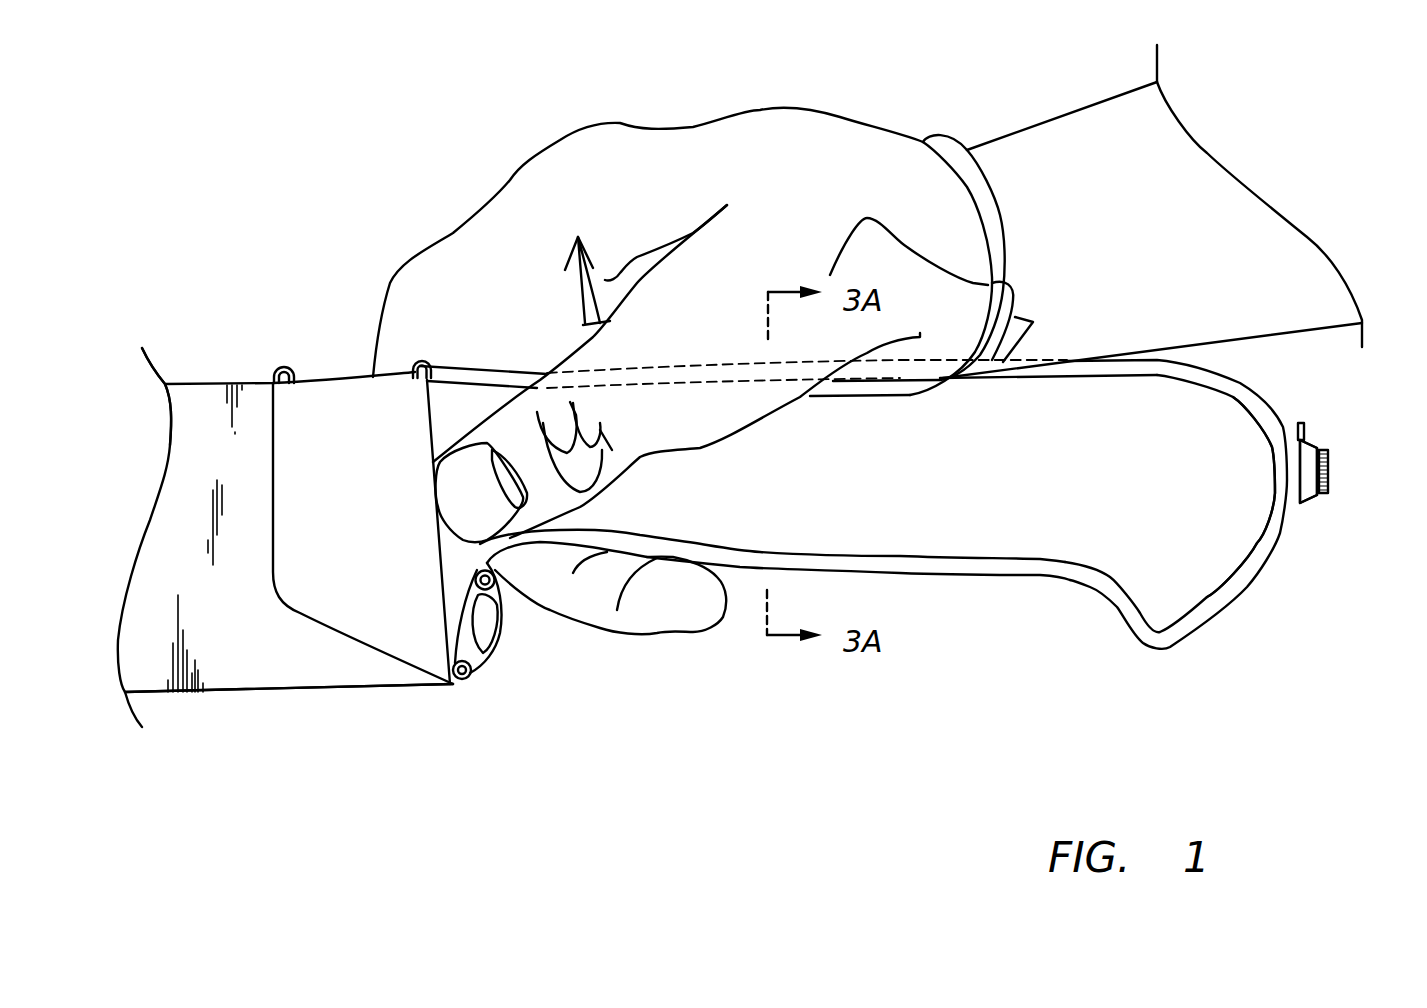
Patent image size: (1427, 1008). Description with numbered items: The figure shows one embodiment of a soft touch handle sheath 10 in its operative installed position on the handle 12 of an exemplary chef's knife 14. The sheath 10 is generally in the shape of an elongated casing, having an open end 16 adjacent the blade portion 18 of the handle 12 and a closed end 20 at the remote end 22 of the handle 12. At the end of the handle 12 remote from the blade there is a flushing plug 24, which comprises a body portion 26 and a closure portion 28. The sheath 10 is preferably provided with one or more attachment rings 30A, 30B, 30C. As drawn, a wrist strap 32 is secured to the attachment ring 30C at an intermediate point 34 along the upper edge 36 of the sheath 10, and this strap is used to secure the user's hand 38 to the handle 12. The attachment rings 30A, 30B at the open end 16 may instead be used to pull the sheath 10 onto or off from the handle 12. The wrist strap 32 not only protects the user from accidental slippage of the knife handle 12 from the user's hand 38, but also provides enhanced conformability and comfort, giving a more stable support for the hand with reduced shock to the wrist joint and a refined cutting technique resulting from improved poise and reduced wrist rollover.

The soft touch handle sheath 10 is at (1013, 565).
The handle 12 is at (1142, 510).
The chef's knife 14 is at (255, 624).
The open end 16 is at (292, 661).
The blade portion 18 is at (205, 405).
The closed end 20 is at (1276, 590).
The remote end 22 is at (1226, 500).
The flushing plug 24 is at (1360, 424).
The body portion 26 is at (1300, 420).
The closure portion 28 is at (1323, 497).
The attachment ring 30A is at (457, 685).
The attachment ring 30B is at (282, 367).
The attachment ring 30C is at (425, 360).
The wrist strap 32 is at (992, 227).
The intermediate point 34 is at (433, 382).
The upper edge 36 is at (928, 362).
The user's hand 38 is at (807, 194).